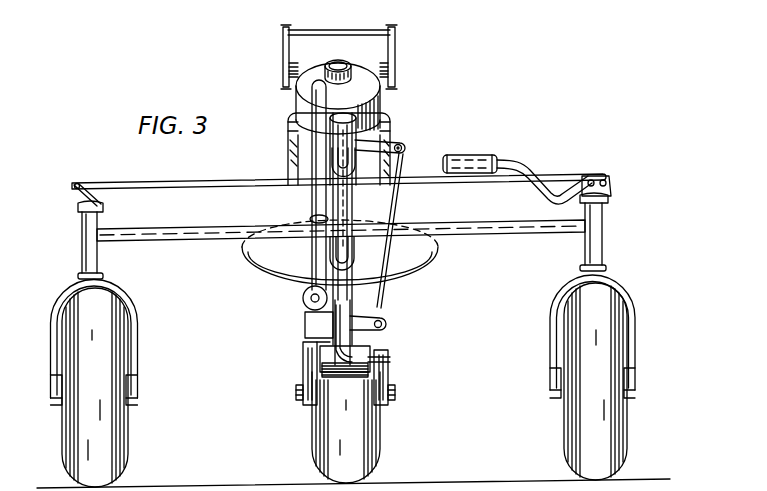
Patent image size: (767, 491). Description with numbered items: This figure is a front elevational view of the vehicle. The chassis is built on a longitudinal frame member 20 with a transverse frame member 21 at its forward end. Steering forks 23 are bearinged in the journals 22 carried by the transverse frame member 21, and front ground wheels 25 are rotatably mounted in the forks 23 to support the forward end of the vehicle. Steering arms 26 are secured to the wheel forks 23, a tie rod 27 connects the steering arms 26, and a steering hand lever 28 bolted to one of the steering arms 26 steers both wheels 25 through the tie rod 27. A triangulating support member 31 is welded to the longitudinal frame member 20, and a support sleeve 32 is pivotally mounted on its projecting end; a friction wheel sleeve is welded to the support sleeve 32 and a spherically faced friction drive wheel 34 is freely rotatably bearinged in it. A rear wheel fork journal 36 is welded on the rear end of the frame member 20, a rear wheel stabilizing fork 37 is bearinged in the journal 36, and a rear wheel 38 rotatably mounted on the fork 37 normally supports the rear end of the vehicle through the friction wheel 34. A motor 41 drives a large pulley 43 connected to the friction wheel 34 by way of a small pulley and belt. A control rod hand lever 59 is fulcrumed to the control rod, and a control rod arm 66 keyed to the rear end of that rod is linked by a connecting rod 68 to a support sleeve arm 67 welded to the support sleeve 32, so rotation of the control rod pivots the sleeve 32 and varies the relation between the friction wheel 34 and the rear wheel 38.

The longitudinal frame member 20 is at (352, 346).
The transverse frame member 21 is at (486, 228).
The journals 22 is at (80, 243).
The steering forks 23 is at (62, 298).
The front ground wheels 25 is at (128, 447).
The steering arms 26 is at (74, 201).
The tie rod 27 is at (160, 187).
The steering hand lever 28 is at (518, 167).
The triangulating support member 31 is at (338, 204).
The support sleeve 32 is at (328, 138).
The spherically faced friction drive wheel 34 is at (420, 272).
The rear wheel fork journal 36 is at (328, 374).
The rear wheel stabilizing fork 37 is at (392, 371).
The rear wheel 38 is at (373, 442).
The motor 41 is at (294, 163).
The large pulley 43 is at (376, 260).
The control rod hand lever 59 is at (332, 112).
The control rod arm 66 is at (382, 326).
The support sleeve arm 67 is at (399, 143).
The connecting rod 68 is at (395, 210).